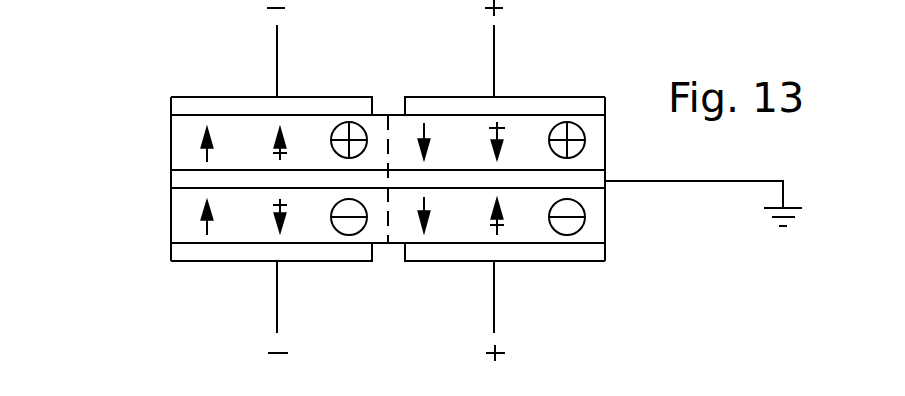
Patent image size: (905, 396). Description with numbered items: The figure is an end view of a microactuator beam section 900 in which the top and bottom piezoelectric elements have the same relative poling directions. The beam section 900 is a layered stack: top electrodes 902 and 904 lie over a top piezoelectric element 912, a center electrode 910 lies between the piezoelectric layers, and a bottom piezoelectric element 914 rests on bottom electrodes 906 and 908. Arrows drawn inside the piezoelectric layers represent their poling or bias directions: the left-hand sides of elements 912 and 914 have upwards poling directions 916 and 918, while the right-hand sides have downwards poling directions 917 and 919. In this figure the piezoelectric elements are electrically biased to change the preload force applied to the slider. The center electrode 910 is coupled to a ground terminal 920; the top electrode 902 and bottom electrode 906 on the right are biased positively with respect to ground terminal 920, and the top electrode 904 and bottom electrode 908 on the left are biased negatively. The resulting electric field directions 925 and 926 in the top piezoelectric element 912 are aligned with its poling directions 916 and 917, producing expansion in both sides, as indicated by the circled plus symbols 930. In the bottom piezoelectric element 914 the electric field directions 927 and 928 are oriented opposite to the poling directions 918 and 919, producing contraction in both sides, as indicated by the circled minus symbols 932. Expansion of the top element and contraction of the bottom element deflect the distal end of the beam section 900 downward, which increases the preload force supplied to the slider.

The microactuator beam section 900 is at (121, 80).
The top electrode 902 is at (558, 96).
The top electrode 904 is at (236, 97).
The bottom electrode 906 is at (560, 261).
The bottom electrode 908 is at (205, 262).
The center electrode 910 is at (171, 181).
The top piezoelectric element 912 is at (171, 154).
The bottom piezoelectric element 914 is at (172, 207).
The upwards poling direction 916 is at (204, 150).
The downwards poling direction 917 is at (430, 152).
The upwards poling direction 918 is at (200, 208).
The downwards poling direction 919 is at (432, 212).
The ground terminal 920 is at (694, 181).
The electric field direction 925 is at (290, 150).
The electric field direction 926 is at (507, 150).
The electric field direction 927 is at (288, 212).
The electric field direction 928 is at (505, 208).
The expansion symbol 930 is at (367, 137).
The contraction symbol 932 is at (367, 216).